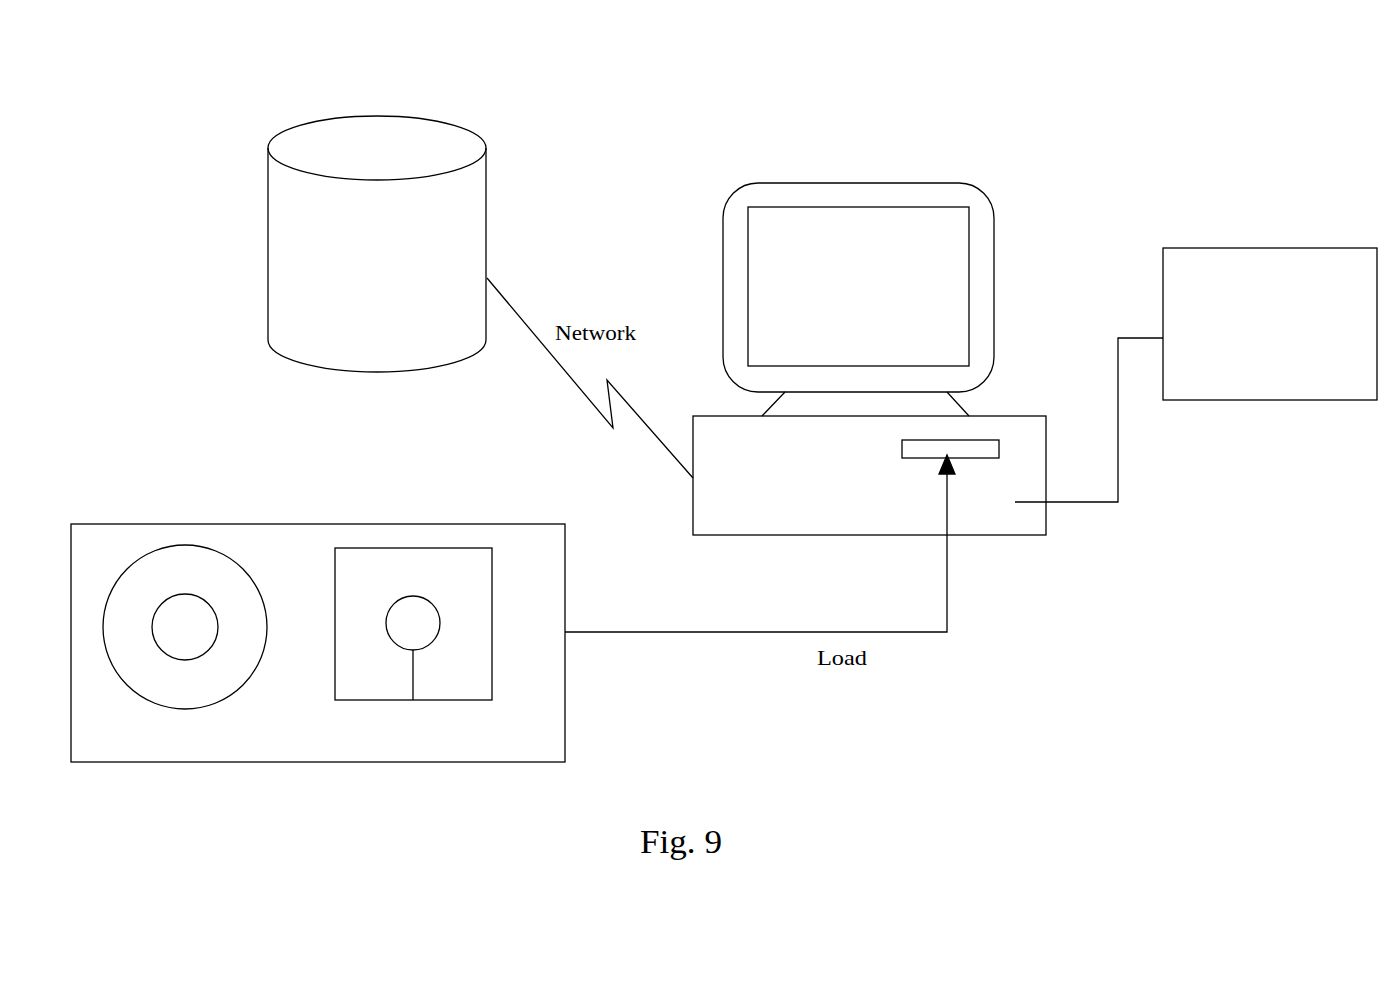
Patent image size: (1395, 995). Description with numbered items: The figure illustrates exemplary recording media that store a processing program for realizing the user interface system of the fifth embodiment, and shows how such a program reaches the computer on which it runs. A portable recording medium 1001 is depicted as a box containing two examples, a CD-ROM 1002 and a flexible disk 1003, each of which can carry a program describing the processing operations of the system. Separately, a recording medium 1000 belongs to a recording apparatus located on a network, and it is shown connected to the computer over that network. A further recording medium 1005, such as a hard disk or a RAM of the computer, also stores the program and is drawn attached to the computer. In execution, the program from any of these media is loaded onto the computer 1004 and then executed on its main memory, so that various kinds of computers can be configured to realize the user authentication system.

The recording medium 1000 is at (458, 127).
The portable recording medium 1001 is at (90, 525).
The CD-ROM 1002 is at (180, 548).
The flexible disk 1003 is at (380, 548).
The computer 1004 is at (955, 183).
The recording medium 1005 is at (1282, 248).